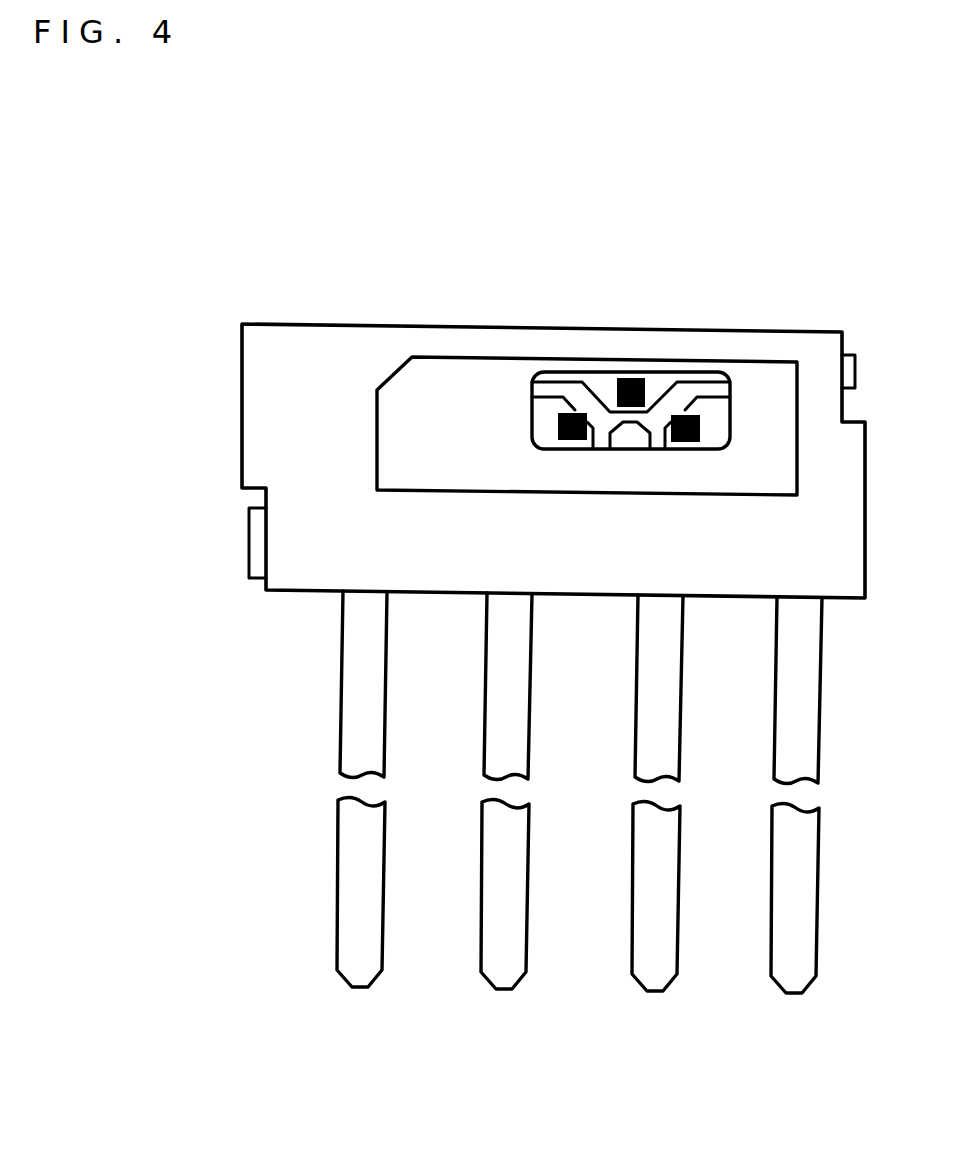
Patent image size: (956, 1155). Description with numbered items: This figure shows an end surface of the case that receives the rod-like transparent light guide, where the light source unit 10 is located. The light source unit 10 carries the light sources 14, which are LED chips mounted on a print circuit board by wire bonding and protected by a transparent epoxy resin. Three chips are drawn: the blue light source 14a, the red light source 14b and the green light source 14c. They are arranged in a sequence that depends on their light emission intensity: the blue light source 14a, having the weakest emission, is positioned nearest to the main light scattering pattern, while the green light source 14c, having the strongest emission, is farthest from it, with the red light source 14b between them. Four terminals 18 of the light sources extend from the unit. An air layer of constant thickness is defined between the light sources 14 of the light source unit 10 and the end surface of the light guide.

The light source unit 10 is at (311, 372).
The light sources 14 is at (663, 387).
The blue light source 14a is at (558, 410).
The red light source 14b is at (622, 372).
The green light source 14c is at (702, 417).
The terminals 18 is at (352, 715).